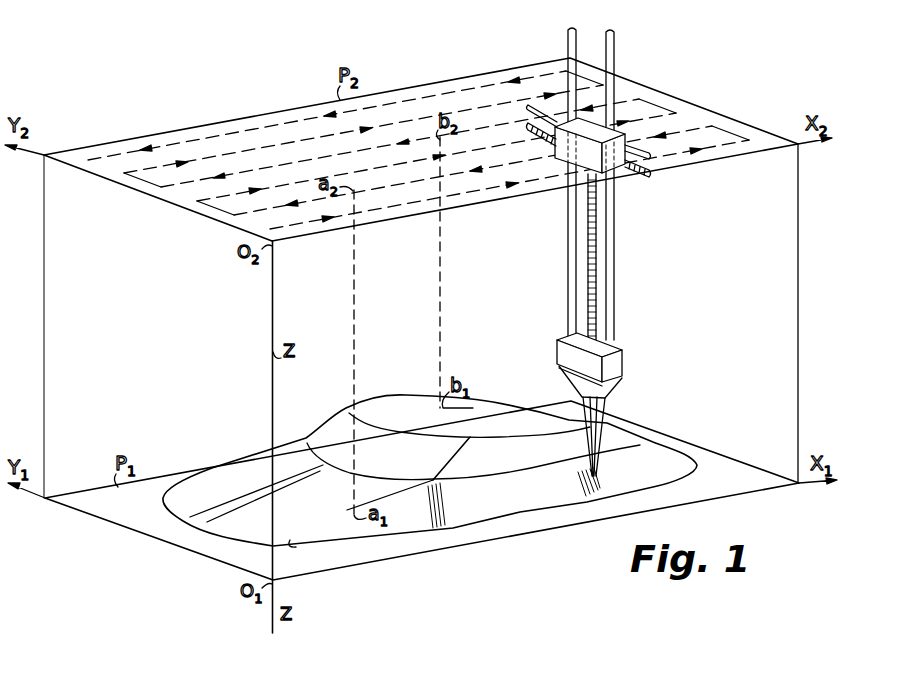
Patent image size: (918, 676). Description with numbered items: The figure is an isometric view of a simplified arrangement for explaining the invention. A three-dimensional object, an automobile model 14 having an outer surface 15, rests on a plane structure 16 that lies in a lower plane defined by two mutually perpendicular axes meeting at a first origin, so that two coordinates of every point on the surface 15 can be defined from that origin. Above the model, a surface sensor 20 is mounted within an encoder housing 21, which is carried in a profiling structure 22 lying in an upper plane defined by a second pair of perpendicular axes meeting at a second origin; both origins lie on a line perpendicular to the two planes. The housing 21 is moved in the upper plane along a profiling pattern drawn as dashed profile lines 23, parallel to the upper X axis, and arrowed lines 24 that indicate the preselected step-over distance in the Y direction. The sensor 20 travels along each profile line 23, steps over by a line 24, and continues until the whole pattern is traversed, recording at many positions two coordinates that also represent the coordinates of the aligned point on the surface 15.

The automobile model 14 is at (404, 388).
The outer surface 15 is at (493, 404).
The plane structure 16 is at (704, 455).
The surface sensor 20 is at (612, 373).
The encoder housing 21 is at (622, 170).
The profiling structure 22 is at (726, 84).
The profile lines 23 is at (264, 146).
The arrowed lines 24 is at (143, 182).